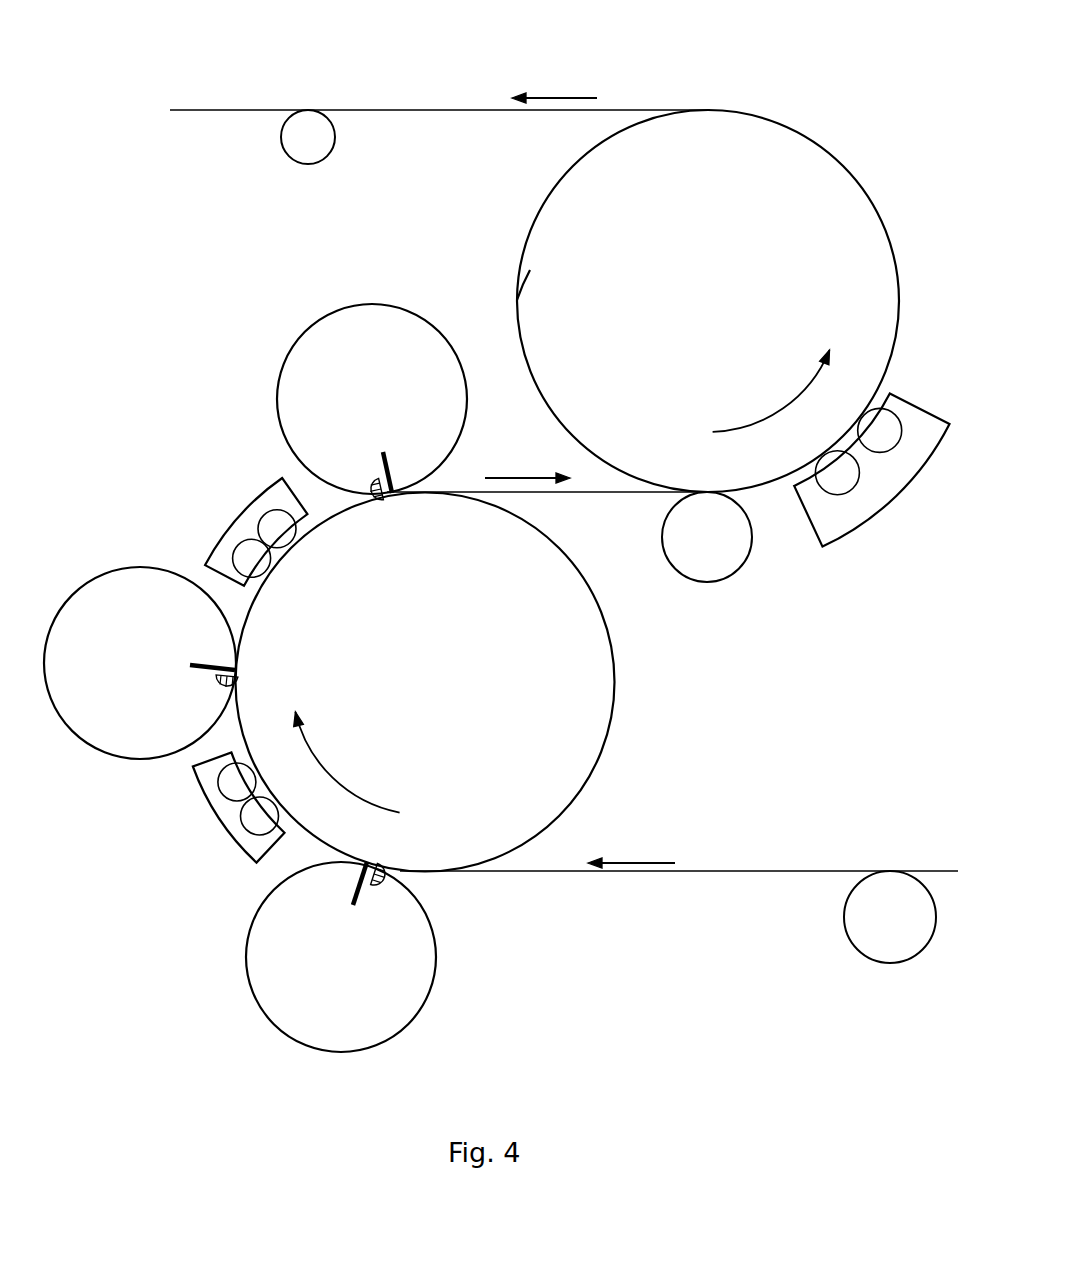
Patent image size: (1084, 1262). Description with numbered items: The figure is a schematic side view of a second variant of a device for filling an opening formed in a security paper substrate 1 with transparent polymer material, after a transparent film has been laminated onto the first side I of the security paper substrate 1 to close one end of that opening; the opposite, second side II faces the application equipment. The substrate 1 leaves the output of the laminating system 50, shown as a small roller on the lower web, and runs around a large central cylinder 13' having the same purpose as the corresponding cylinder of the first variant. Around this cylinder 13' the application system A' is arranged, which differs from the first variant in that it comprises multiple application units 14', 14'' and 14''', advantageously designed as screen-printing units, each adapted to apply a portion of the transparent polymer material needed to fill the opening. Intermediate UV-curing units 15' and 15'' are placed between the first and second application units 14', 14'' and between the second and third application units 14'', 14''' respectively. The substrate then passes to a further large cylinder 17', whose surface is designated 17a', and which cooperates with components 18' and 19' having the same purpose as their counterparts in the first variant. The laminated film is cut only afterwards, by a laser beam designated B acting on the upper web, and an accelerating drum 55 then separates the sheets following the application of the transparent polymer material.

The laser beam B is at (466, 110).
The security paper substrate 1 is at (638, 873).
The first side of the security paper substrate I is at (752, 871).
The second side of the security paper substrate II is at (568, 873).
The accelerating drum 55 is at (305, 151).
The output of the laminating system 50 is at (865, 939).
The component 17' is at (743, 301).
The surface of component 17' 17a' is at (478, 279).
The component 18' is at (739, 541).
The component 19' is at (871, 477).
The component 13' is at (467, 682).
The first application unit 14' is at (331, 971).
The second application unit 14'' is at (141, 632).
The third application unit 14''' is at (357, 393).
The intermediate UV-curing unit 15' is at (224, 808).
The intermediate UV-curing unit 15'' is at (244, 519).
The application system A' is at (114, 977).